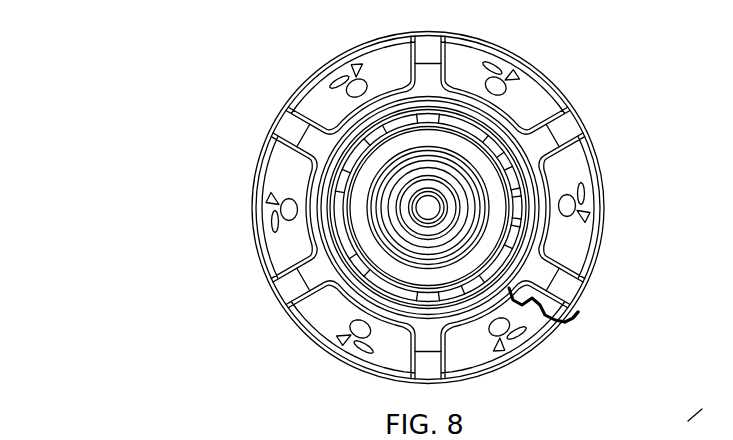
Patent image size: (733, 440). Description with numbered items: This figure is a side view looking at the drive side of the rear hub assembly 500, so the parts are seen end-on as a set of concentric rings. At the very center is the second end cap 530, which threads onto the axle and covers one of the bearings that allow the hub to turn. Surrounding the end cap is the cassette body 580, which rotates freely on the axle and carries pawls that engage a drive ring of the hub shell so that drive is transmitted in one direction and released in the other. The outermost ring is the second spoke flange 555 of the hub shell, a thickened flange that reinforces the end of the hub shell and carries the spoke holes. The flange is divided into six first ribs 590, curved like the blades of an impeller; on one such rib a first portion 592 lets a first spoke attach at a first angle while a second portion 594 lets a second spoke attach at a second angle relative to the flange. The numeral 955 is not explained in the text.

The rear hub assembly 500 is at (113, 70).
The second end cap 530 is at (385, 210).
The second spoke flange 555 is at (478, 58).
The cassette body 580 is at (360, 110).
The first ribs 590 is at (423, 32).
The first portion 592 is at (520, 292).
The second portion 594 is at (567, 323).
The container body 955 is at (709, 424).